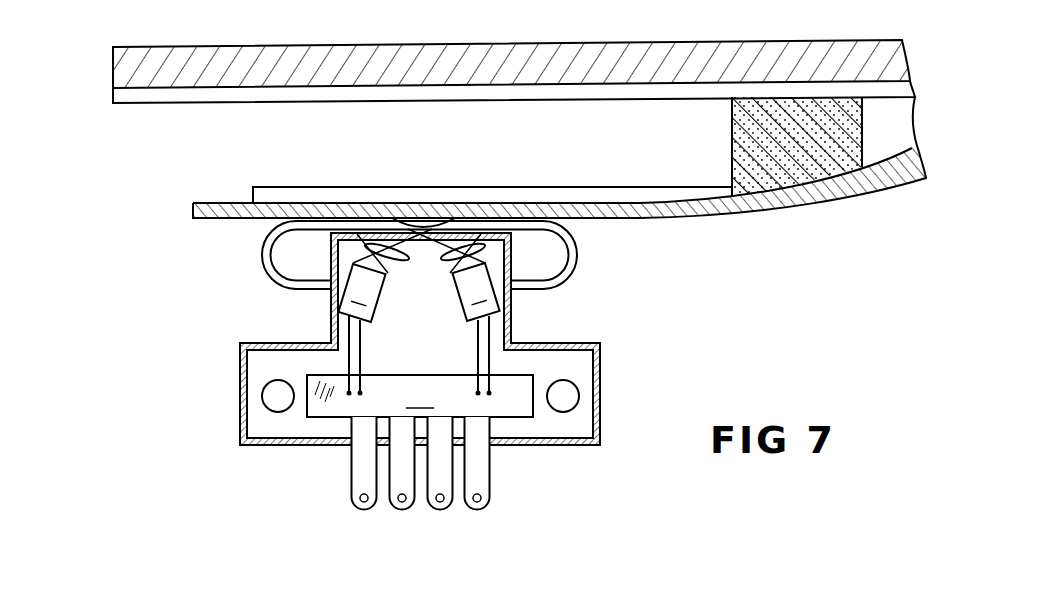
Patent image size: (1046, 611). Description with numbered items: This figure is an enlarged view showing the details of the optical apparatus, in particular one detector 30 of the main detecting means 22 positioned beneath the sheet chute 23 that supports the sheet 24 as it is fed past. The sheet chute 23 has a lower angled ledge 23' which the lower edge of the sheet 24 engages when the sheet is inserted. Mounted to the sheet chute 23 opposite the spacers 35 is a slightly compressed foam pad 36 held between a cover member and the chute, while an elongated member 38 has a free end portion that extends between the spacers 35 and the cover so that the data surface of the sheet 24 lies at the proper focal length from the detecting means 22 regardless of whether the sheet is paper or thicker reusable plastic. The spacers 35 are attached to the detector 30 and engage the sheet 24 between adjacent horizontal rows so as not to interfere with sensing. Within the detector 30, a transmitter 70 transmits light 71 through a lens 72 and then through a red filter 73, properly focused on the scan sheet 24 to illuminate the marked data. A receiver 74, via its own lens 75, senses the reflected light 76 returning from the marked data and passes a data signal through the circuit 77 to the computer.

The main detecting means 22 is at (545, 446).
The sheet chute 23 is at (511, 46).
The lower angled ledge 23' is at (482, 111).
The sheet 24 is at (662, 217).
The detector 30 is at (407, 340).
The spacer 35 is at (571, 280).
The foam pad 36 is at (732, 150).
The elongated member 38 is at (619, 186).
The transmitter 70 is at (343, 306).
The light 71 is at (390, 262).
The lens 72 is at (381, 262).
The red filter 73 is at (513, 233).
The receiver 74 is at (497, 308).
The lens 75 is at (466, 262).
The reflected light 76 is at (455, 262).
The circuit 77 is at (328, 412).